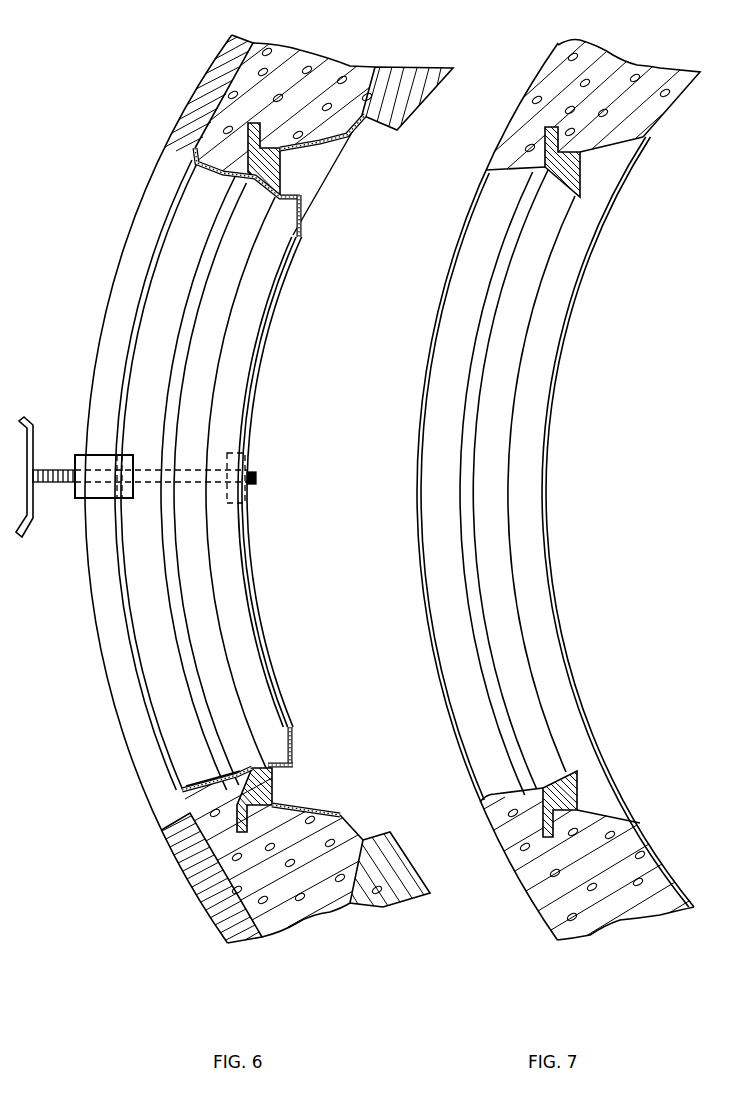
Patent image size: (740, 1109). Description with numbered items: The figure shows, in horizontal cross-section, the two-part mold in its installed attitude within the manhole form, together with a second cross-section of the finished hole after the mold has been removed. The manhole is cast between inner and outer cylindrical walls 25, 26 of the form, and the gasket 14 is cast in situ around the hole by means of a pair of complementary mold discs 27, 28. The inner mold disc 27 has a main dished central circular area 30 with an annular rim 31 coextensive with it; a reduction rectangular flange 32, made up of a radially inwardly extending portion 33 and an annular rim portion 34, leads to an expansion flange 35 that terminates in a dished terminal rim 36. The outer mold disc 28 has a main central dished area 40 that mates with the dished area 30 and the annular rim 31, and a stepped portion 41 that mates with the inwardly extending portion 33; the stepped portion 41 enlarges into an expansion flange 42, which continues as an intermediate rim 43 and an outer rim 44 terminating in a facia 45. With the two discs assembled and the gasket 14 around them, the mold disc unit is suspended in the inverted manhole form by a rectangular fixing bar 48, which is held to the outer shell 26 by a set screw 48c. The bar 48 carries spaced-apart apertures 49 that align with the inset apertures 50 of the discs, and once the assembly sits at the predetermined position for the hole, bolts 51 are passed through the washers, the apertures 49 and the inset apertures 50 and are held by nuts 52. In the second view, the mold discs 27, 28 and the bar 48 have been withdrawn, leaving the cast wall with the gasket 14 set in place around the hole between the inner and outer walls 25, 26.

The gasket 14 is at (285, 128).
The inner cylindrical wall 25 is at (415, 102).
The outer cylindrical wall 26 is at (202, 92).
The inner mold disc 27 is at (332, 160).
The outer mold disc 28 is at (200, 174).
The main dished central circular area 30 is at (262, 342).
The annular rim 31 is at (298, 245).
The reduction rectangular flange 32 is at (297, 763).
The radially inwardly extending portion 33 is at (303, 225).
The annular rim portion 34 is at (292, 186).
The expansion flange 35 is at (330, 150).
The dished terminal rim 36 is at (363, 128).
The main central dished area 40 is at (294, 733).
The stepped portion 41 is at (282, 727).
The expansion flange 42 is at (252, 769).
The intermediate rim 43 is at (182, 822).
The outer rim 44 is at (190, 795).
The facia 45 is at (232, 778).
The rectangular fixing bar 48 is at (90, 495).
The set screw 48c is at (50, 466).
The apertures 49 is at (110, 492).
The nut 50 is at (258, 478).
The bolts 51 is at (193, 467).
The nuts 52 is at (233, 460).